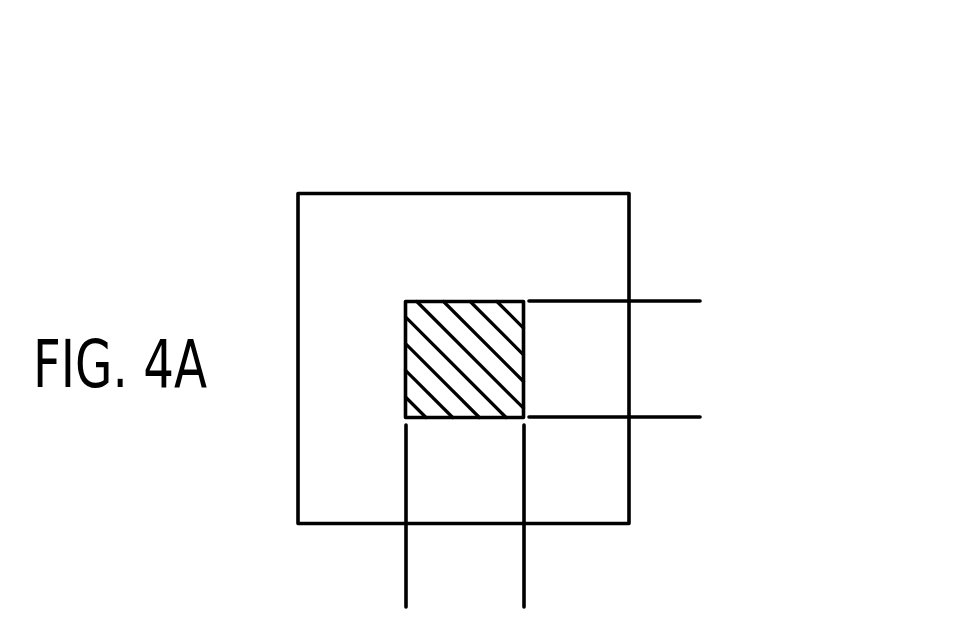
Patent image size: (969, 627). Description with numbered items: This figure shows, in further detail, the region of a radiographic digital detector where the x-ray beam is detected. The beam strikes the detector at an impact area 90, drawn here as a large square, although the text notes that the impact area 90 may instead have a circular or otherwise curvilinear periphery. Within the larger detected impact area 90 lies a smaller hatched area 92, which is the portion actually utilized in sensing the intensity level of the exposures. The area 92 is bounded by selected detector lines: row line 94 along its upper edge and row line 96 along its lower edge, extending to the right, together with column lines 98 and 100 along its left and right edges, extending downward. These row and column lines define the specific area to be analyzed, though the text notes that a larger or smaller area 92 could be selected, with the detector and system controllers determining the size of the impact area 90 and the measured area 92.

The impact area 90 is at (484, 158).
The area 92 is at (511, 308).
The row line 94 is at (671, 299).
The row line 96 is at (676, 415).
The column line 98 is at (404, 578).
The column line 100 is at (526, 584).